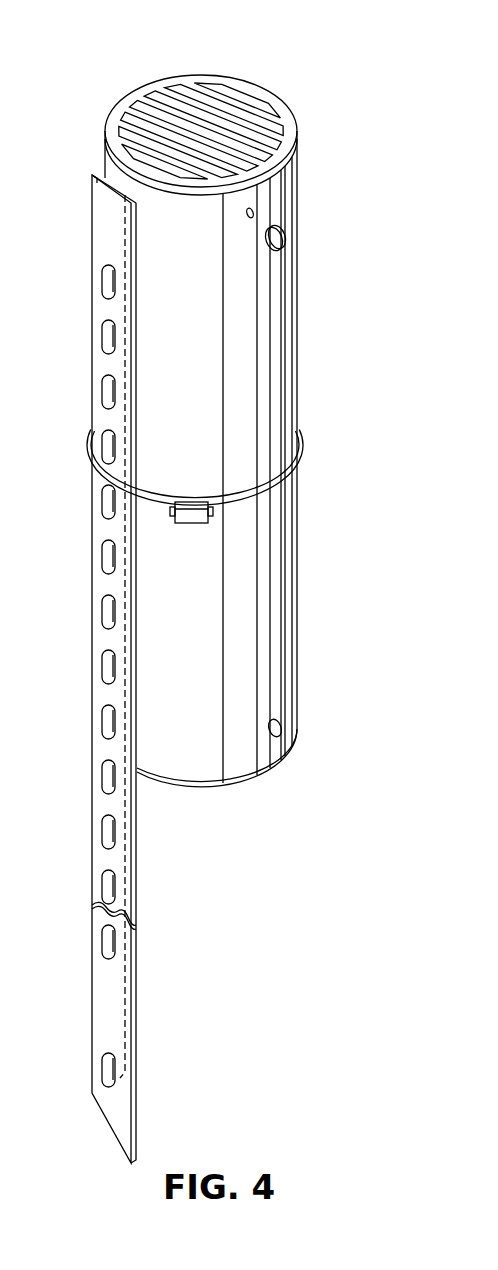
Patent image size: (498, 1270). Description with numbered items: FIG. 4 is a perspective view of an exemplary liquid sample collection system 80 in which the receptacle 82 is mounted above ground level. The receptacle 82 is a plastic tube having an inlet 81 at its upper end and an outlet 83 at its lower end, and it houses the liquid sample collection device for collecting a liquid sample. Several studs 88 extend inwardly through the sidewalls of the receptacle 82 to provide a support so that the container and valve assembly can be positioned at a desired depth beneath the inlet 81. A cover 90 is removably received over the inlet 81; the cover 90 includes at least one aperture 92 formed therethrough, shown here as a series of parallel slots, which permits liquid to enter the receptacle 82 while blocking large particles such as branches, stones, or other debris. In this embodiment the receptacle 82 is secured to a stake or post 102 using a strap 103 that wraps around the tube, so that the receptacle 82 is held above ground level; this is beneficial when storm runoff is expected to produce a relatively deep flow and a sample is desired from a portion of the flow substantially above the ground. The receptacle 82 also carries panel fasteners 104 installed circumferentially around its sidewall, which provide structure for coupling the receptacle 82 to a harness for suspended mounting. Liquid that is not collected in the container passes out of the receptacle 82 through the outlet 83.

The liquid sample collection system 80 is at (211, 427).
The inlet 81 is at (181, 103).
The receptacle 82 is at (298, 334).
The outlet 83 is at (197, 790).
The studs 88 is at (287, 726).
The cover 90 is at (181, 121).
The aperture 92 is at (137, 100).
The post 102 is at (92, 643).
The strap 103 is at (300, 482).
The panel fasteners 104 is at (287, 243).